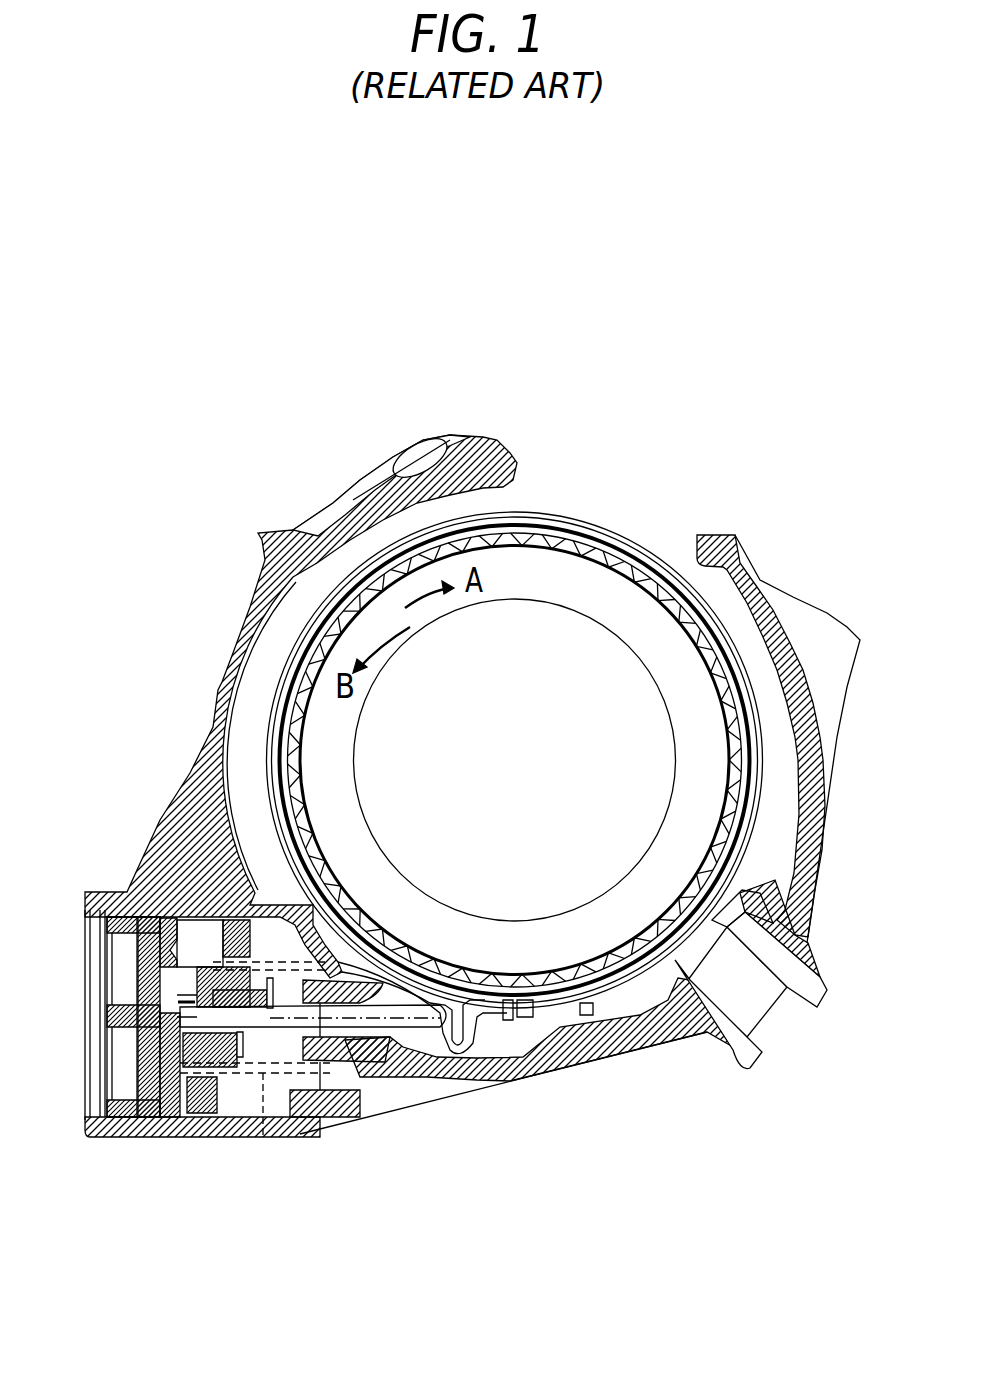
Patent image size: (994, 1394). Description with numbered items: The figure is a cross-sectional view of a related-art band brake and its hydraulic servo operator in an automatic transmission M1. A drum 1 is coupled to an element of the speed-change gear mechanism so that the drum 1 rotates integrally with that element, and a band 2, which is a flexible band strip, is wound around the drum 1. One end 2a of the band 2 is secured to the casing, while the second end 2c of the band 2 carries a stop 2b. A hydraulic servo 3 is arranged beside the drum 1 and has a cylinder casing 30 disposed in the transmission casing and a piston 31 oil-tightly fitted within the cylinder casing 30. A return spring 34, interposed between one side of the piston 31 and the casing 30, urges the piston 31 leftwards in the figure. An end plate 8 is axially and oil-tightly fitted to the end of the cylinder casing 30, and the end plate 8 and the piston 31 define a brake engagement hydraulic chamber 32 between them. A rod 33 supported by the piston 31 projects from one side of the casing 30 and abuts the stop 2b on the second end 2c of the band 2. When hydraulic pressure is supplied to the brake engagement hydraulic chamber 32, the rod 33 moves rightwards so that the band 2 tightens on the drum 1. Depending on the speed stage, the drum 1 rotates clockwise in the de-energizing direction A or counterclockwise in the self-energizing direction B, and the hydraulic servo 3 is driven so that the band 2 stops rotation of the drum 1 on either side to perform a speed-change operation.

The automatic transmission M1 is at (725, 417).
The drum 1 is at (658, 660).
The band 2 is at (598, 527).
The one end of the band 2a is at (760, 893).
The stop 2b is at (472, 1040).
The second end of the band 2c is at (507, 1005).
The hydraulic servo 3 is at (252, 1240).
The end plate 8 is at (125, 1137).
The cylinder casing 30 is at (130, 890).
The piston 31 is at (240, 1137).
The brake engagement hydraulic chamber 32 is at (175, 1137).
The rod 33 is at (413, 1043).
The return spring 34 is at (285, 1137).